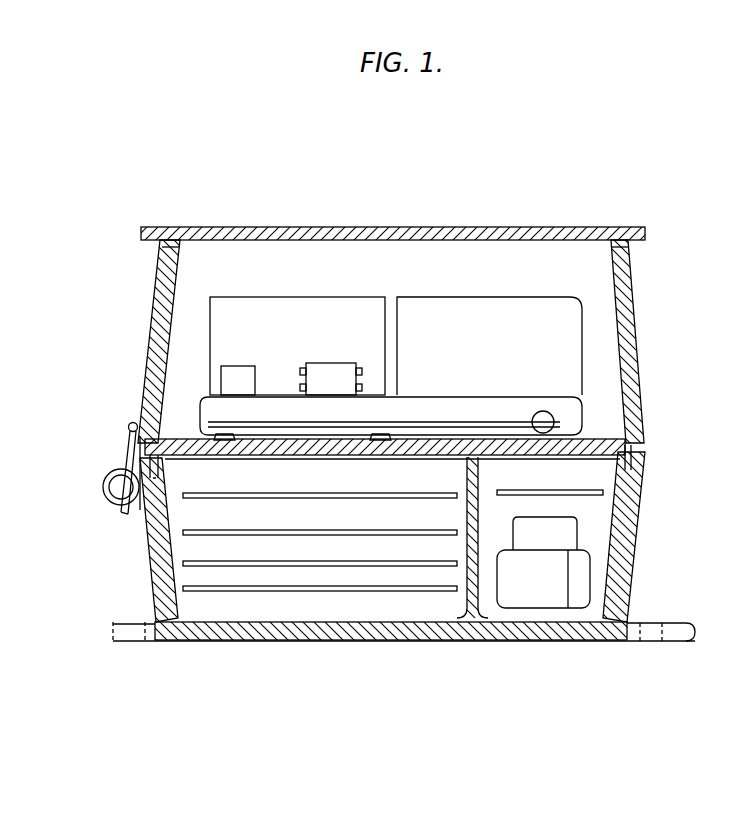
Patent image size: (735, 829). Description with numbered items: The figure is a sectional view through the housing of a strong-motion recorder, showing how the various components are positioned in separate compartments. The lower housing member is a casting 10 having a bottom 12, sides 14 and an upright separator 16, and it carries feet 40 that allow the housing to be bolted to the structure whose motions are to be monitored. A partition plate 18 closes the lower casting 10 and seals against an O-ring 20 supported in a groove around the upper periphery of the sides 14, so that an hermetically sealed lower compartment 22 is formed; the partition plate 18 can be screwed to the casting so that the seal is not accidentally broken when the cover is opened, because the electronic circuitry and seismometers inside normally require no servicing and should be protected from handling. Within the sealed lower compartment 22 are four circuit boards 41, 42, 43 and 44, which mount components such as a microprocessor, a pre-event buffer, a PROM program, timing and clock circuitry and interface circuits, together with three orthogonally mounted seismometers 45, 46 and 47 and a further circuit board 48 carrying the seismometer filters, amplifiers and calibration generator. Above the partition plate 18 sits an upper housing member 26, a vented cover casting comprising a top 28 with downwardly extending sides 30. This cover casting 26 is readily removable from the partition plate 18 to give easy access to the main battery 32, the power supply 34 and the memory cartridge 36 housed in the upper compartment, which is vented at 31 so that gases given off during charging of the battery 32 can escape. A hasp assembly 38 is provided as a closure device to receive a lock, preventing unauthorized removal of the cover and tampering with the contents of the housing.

The casting 10 is at (601, 644).
The bottom 12 is at (440, 642).
The sides 14 is at (152, 550).
The upright separator 16 is at (467, 478).
The partition plate 18 is at (348, 458).
The O-ring 20 is at (165, 480).
The lower compartment 22 is at (282, 484).
The upper housing member 26 is at (404, 227).
The top 28 is at (521, 227).
The sides 30 is at (150, 330).
The vent 31 is at (165, 244).
The main battery 32 is at (553, 312).
The power supply 34 is at (250, 296).
The memory cartridge 36 is at (455, 412).
The hasp assembly 38 is at (110, 485).
The feet 40 is at (102, 618).
The circuit board 41 is at (222, 497).
The circuit board 42 is at (295, 530).
The circuit board 43 is at (329, 561).
The circuit board 44 is at (403, 592).
The seismometer 45 is at (557, 540).
The seismometer 46 is at (547, 582).
The seismometer 47 is at (592, 564).
The circuit board 48 is at (600, 488).